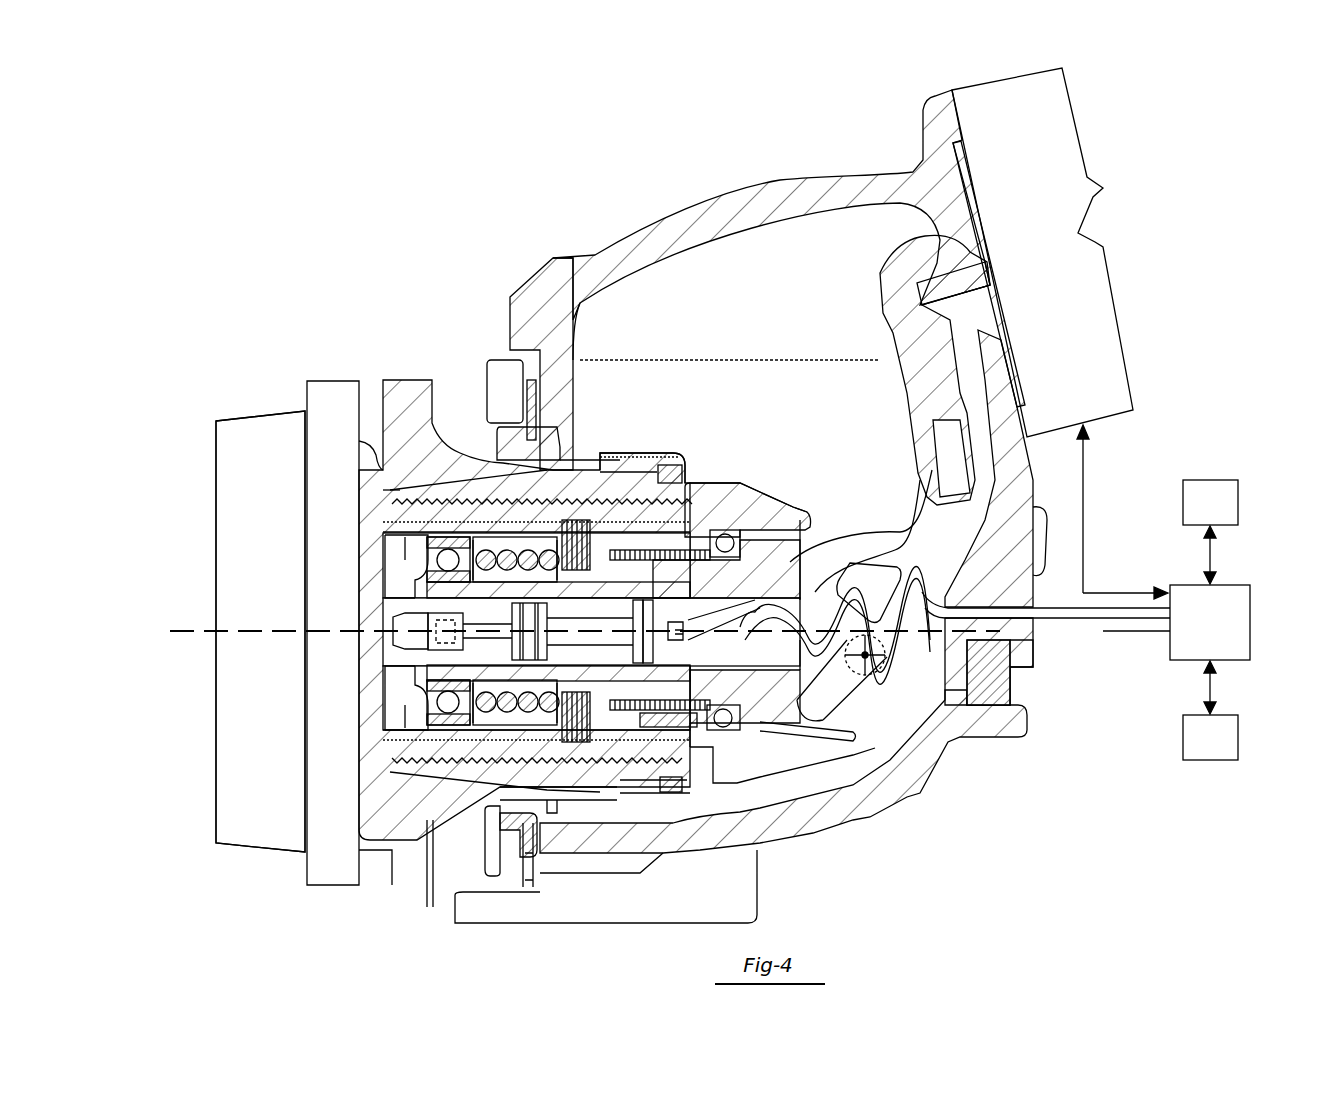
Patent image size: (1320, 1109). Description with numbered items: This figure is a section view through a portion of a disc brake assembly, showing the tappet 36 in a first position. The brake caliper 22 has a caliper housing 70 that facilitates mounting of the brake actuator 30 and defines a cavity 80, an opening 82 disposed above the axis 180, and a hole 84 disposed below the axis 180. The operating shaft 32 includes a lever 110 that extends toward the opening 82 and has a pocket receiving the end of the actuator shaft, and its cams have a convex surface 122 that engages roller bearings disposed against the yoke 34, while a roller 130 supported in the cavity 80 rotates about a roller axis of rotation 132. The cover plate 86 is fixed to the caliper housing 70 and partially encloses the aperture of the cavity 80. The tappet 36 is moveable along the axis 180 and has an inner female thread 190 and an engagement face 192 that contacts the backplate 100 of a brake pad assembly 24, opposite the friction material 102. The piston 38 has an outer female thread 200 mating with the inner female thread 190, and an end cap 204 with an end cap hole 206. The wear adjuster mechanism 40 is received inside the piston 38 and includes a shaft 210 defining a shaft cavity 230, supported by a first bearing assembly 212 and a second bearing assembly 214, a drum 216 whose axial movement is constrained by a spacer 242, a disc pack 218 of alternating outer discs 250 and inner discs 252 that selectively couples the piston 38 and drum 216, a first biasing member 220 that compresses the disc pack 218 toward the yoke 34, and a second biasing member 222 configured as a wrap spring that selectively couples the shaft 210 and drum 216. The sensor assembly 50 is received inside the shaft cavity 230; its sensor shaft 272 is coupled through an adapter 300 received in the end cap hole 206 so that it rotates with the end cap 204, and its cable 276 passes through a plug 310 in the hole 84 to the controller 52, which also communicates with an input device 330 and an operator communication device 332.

The brake caliper 22 is at (771, 205).
The caliper housing 70 is at (745, 182).
The brake actuator 30 is at (1058, 248).
The cavity 80 is at (768, 303).
The lever 110 is at (885, 275).
The opening 82 is at (985, 348).
The tappet 36 is at (398, 378).
The cover plate 86 is at (520, 378).
The outer female thread 200 is at (480, 508).
The inner female thread 190 is at (612, 510).
The wear adjuster mechanism 40 is at (688, 522).
The yoke 34 is at (780, 500).
The convex surface 122 is at (830, 542).
The brake pad assembly 24 is at (250, 461).
The engagement face 192 is at (358, 490).
The piston 38 is at (382, 512).
The end cap 204 is at (395, 562).
The adapter 300 is at (395, 622).
The axis 180 is at (205, 631).
The end cap hole 206 is at (400, 642).
The shaft cavity 230 is at (440, 664).
The first bearing assembly 212 is at (420, 708).
The friction material 102 is at (246, 789).
The backplate 100 is at (314, 789).
The sensor shaft 272 is at (520, 610).
The sensor assembly 50 is at (624, 634).
The spacer 242 is at (545, 690).
The shaft 210 is at (710, 588).
The drum 216 is at (645, 692).
The second bearing assembly 214 is at (725, 702).
The second biasing member 222 is at (700, 727).
The first biasing member 220 is at (488, 725).
The outer disc 250 is at (575, 730).
The inner disc 252 is at (592, 742).
The disc pack 218 is at (585, 757).
The roller axis of rotation 132 is at (880, 660).
The roller 130 is at (862, 690).
The operating shaft 32 is at (957, 540).
The plug 310 is at (1010, 652).
The cable 276 is at (1100, 632).
The hole 84 is at (1010, 712).
The input device 330 is at (1210, 532).
The controller 52 is at (1163, 542).
The operator communication device 332 is at (1210, 710).